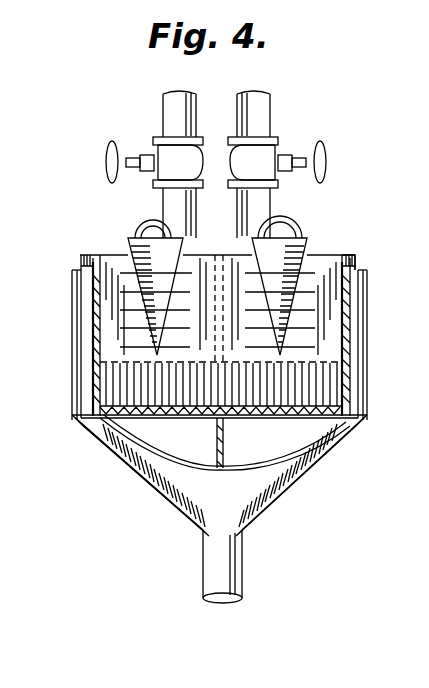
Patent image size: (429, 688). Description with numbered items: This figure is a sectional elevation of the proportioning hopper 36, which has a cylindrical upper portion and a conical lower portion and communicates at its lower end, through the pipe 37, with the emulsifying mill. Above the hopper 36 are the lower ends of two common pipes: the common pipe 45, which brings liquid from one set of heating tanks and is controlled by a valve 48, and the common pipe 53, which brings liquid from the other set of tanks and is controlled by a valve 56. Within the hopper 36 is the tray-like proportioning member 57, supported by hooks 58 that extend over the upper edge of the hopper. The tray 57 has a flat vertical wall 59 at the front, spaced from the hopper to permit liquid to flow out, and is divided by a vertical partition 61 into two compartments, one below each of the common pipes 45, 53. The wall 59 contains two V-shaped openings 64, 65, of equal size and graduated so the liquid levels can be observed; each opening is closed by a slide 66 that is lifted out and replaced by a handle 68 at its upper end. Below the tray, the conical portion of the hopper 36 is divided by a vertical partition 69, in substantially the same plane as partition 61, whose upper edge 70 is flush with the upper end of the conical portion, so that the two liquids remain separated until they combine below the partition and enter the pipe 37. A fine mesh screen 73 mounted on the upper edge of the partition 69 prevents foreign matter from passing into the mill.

The proportioning hopper 36 is at (322, 448).
The pipe 37 is at (242, 554).
The common pipe 45 is at (162, 104).
The valve 48 is at (105, 162).
The common pipe 53 is at (270, 104).
The valve 56 is at (255, 160).
The proportioning member 57 is at (350, 254).
The hooks 58 is at (80, 268).
The flat vertical wall 59 is at (100, 298).
The vertical partition 61 is at (209, 284).
The V-shaped opening 64 is at (130, 249).
The V-shaped opening 65 is at (300, 250).
The slide 66 is at (140, 238).
The handle 68 is at (151, 221).
The vertical partition 69 is at (228, 434).
The upper edge 70 is at (220, 416).
The screen 73 is at (104, 428).